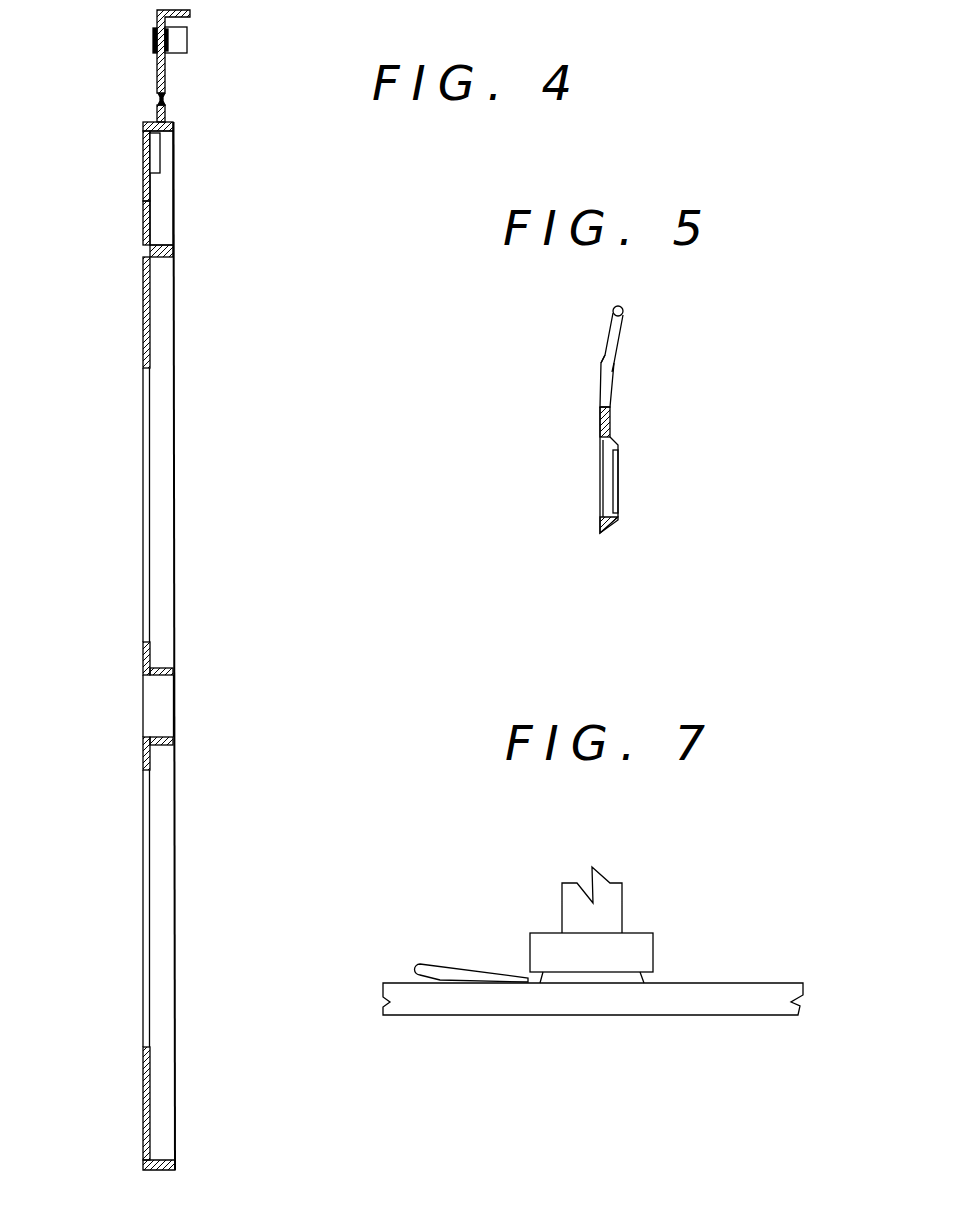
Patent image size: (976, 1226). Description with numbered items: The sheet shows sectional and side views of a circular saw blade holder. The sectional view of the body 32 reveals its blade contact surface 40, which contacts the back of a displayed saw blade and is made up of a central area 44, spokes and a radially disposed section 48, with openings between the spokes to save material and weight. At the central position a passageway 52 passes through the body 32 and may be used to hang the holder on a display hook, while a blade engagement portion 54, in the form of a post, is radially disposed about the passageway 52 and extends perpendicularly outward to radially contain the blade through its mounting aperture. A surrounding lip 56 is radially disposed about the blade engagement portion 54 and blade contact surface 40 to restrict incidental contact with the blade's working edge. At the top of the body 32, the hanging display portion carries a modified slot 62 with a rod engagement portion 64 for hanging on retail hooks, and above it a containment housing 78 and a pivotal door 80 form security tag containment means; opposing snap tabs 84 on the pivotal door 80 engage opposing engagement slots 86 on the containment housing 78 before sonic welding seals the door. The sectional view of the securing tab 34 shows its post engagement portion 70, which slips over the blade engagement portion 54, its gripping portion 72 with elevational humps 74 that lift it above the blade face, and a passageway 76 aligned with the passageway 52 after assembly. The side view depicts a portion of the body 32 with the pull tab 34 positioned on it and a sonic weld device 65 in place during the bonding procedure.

In FIG. 4, the body 32 is at (142, 308).
In FIG. 7, the body 32 is at (713, 1015).
In FIG. 5, the securing tab 34 is at (610, 425).
In FIG. 7, the securing tab 34 is at (463, 967).
In FIG. 4, the blade contact surface 40 is at (152, 350).
In FIG. 4, the central area 44 is at (153, 653).
In FIG. 4, the radially disposed section 48 is at (153, 1085).
In FIG. 4, the passageway 52 is at (165, 717).
In FIG. 4, the blade engagement portion 54 is at (163, 747).
In FIG. 4, the surrounding lip 56 is at (162, 258).
In FIG. 4, the modified slot 62 is at (142, 218).
In FIG. 4, the rod engagement portion 64 is at (150, 193).
In FIG. 7, the sonic weld device 65 is at (653, 953).
In FIG. 5, the post engagement portion 70 is at (600, 500).
In FIG. 5, the gripping portion 72 is at (622, 342).
In FIG. 5, the elevational humps 74 is at (603, 358).
In FIG. 5, the passageway 76 is at (607, 470).
In FIG. 4, the containment housing 78 is at (143, 167).
In FIG. 4, the pivotal door 80 is at (156, 14).
In FIG. 4, the snap tab 84 is at (188, 46).
In FIG. 4, the engagement slot 86 is at (153, 152).